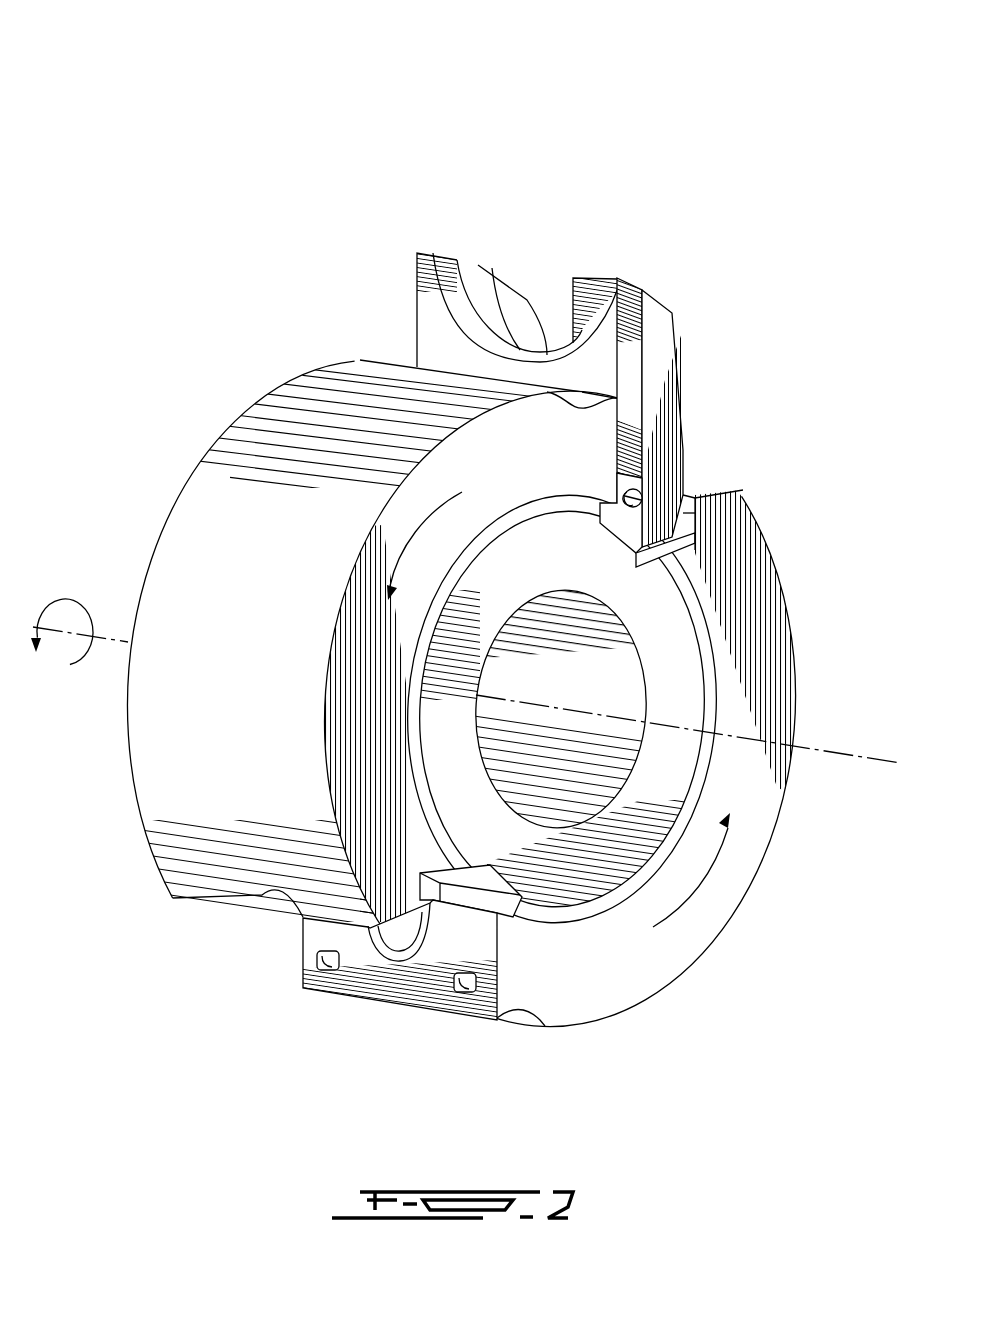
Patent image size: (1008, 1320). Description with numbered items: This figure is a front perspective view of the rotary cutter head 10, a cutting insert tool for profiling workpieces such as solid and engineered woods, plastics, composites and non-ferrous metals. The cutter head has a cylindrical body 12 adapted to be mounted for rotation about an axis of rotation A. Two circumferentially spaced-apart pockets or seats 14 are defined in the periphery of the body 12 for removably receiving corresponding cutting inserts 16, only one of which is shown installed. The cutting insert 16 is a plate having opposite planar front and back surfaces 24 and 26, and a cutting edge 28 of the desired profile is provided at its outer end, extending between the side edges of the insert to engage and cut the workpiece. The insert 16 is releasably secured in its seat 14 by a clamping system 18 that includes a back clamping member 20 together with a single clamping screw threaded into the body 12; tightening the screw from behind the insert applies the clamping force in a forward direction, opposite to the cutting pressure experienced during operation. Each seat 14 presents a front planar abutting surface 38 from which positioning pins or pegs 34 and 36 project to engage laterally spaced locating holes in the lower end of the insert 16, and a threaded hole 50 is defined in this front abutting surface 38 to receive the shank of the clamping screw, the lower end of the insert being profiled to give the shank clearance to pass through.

The rotary cutter head 10 is at (150, 160).
The cylindrical body 12 is at (745, 568).
The seat 14 is at (727, 450).
The cutting insert 16 is at (636, 278).
The clamping system 18 is at (712, 352).
The back clamping member 20 is at (655, 328).
The front surface 24 is at (427, 313).
The back surface 26 is at (640, 297).
The cutting edge 28 is at (433, 253).
The positioning peg 34 is at (327, 963).
The positioning peg 36 is at (462, 994).
The front abutting surface 38 is at (420, 985).
The threaded hole 50 is at (402, 945).
The axis of rotation A is at (866, 755).